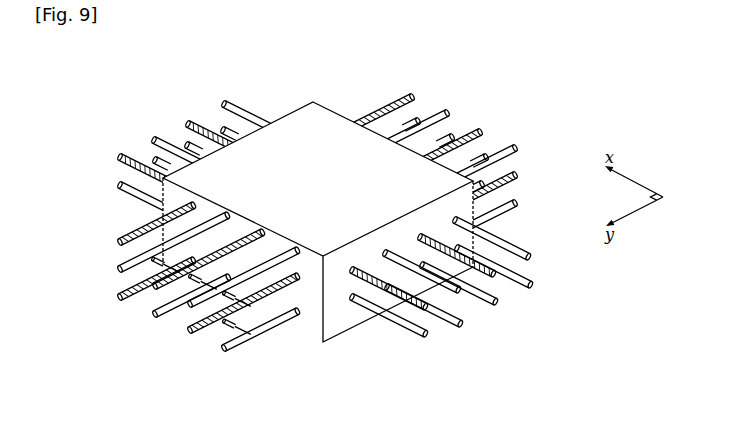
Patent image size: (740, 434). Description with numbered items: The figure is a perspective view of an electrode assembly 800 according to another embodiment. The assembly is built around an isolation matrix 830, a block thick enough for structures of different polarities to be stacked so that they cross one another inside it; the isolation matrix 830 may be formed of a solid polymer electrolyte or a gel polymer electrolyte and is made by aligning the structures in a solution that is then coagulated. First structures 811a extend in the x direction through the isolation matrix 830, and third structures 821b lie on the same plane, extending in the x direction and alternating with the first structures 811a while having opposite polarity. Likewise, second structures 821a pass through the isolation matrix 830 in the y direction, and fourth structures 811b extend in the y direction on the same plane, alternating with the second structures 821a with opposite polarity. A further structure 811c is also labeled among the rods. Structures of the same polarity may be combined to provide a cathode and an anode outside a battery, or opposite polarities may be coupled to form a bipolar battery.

The electrode assembly 800 is at (328, 232).
The first structures 811a is at (154, 137).
The fourth structures 811b is at (445, 111).
The third upper pin 811c is at (222, 103).
The second structures 821a is at (118, 244).
The third structures 821b is at (475, 311).
The isolation matrix 830 is at (341, 321).